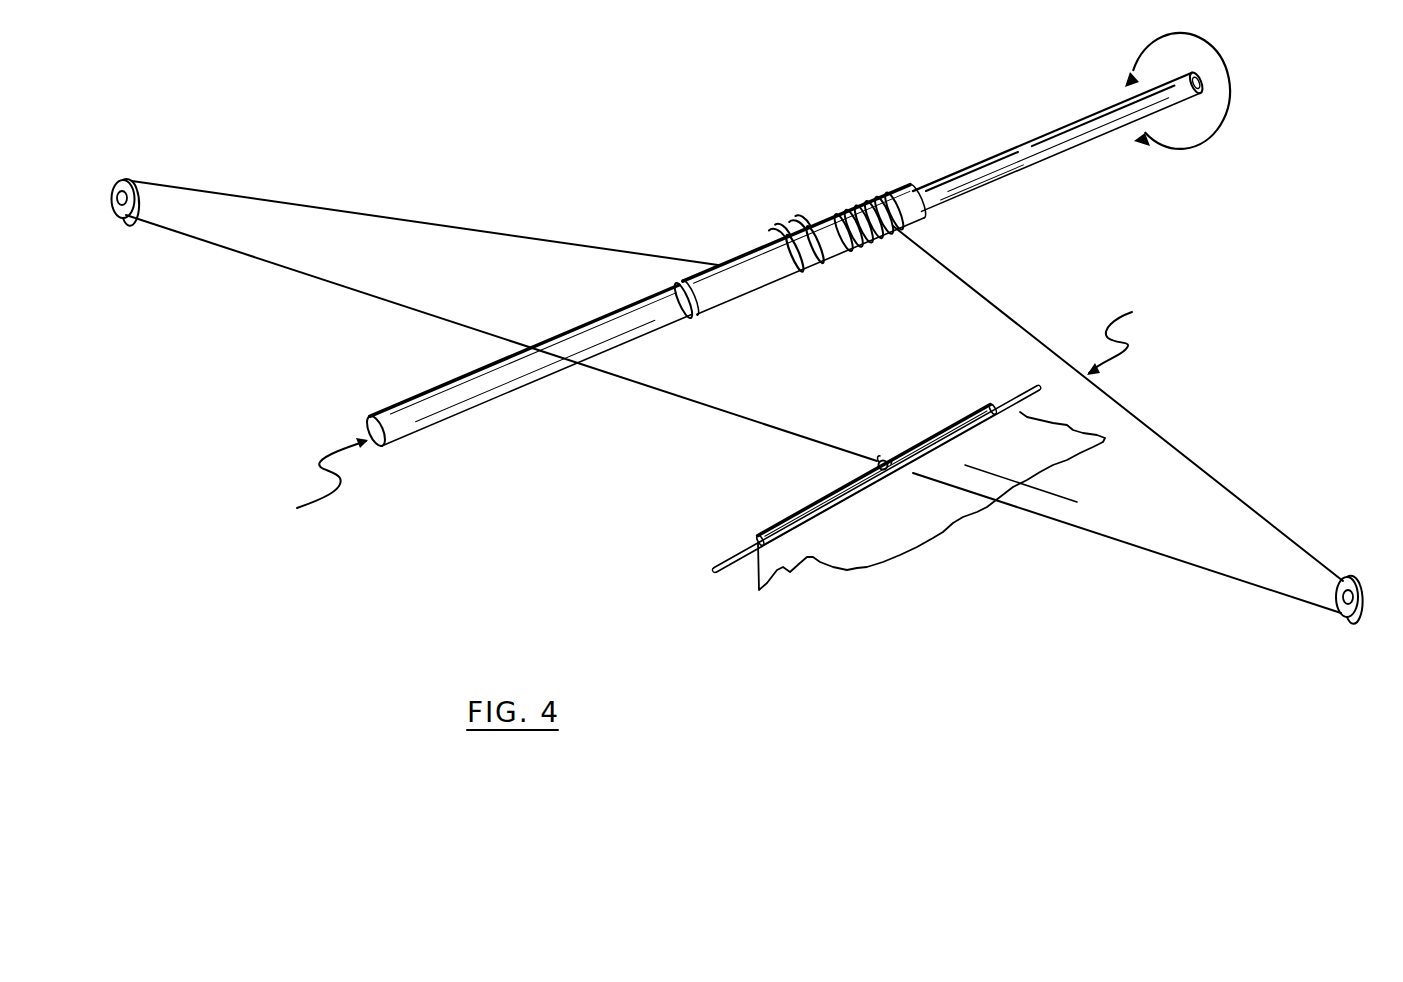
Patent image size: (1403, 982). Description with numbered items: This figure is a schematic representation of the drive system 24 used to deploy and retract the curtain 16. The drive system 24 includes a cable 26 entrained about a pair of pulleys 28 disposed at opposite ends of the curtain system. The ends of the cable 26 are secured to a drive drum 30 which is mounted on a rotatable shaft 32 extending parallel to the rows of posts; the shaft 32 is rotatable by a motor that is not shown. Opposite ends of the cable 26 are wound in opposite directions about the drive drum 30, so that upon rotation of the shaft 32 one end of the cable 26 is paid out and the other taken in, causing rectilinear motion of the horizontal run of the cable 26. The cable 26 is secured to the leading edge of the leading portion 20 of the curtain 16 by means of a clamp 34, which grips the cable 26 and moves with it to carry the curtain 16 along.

The curtain 16 is at (943, 530).
The leading portion 20 is at (853, 550).
The drive system 24 is at (440, 201).
The cable 26 is at (341, 288).
The pulleys 28 is at (115, 190).
The drive drum 30 is at (748, 251).
The rotatable shaft 32 is at (1048, 134).
The clamp 34 is at (882, 460).